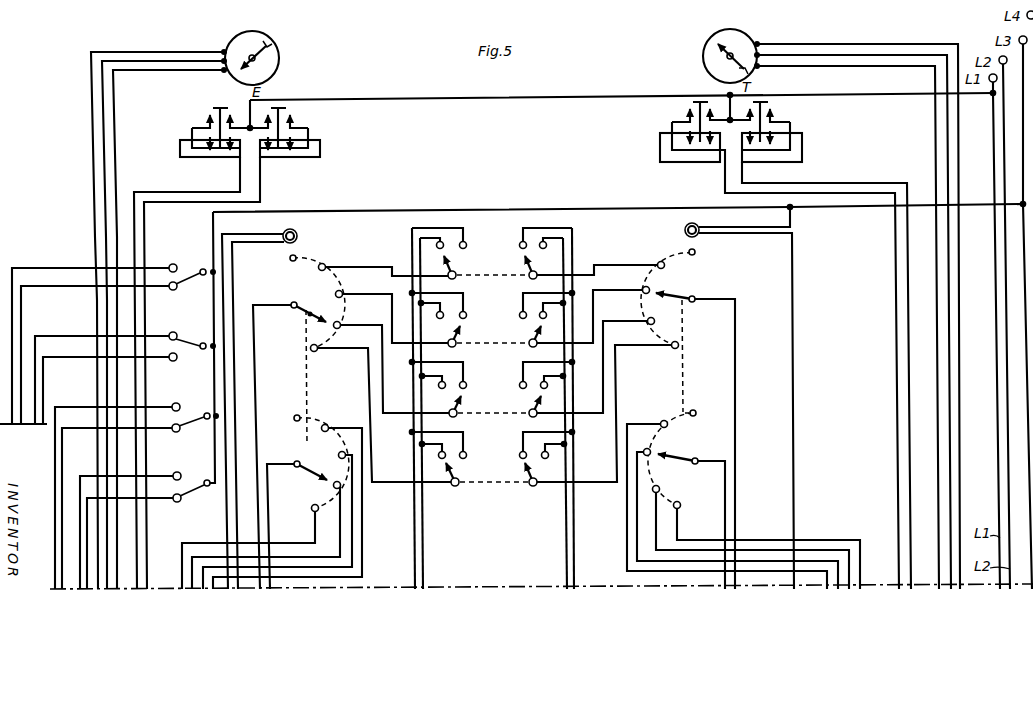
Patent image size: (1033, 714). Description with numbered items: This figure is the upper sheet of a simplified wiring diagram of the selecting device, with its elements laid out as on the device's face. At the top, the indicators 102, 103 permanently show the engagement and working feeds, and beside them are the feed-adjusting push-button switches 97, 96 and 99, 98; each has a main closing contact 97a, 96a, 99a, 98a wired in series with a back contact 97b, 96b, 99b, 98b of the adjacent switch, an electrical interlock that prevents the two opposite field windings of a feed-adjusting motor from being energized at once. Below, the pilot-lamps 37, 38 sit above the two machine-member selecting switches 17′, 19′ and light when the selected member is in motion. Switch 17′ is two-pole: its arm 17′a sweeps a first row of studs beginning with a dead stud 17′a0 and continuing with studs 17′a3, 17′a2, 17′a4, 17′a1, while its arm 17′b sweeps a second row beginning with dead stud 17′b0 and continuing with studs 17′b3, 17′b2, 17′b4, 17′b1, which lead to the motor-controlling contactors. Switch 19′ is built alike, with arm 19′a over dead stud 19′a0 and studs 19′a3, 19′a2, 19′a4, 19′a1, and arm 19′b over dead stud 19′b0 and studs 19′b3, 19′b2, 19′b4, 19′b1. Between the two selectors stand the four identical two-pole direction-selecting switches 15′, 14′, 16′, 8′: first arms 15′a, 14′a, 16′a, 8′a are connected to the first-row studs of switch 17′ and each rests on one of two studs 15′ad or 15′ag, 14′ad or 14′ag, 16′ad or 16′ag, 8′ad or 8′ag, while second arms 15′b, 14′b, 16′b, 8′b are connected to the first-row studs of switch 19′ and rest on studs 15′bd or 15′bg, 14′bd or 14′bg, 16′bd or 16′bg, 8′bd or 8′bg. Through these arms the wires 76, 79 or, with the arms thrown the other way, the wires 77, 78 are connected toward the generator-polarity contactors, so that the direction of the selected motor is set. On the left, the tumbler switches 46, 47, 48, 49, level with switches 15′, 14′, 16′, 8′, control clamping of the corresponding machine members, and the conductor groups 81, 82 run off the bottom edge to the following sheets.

The indicator 102 is at (280, 61).
The indicator 103 is at (709, 56).
The push-button switch 97 is at (195, 133).
The main closing contact 97a is at (213, 107).
The back contact 97b is at (198, 150).
The push-button switch 96 is at (300, 145).
The main closing contact 96a is at (286, 106).
The back contact 96b is at (300, 157).
The push-button switch 99 is at (676, 143).
The main closing contact 99a is at (693, 103).
The back contact 99b is at (690, 160).
The push-button switch 98 is at (779, 142).
The main closing contact 98a is at (768, 104).
The back contact 98b is at (765, 160).
The pilot-lamp 37 is at (298, 234).
The pilot-lamp 38 is at (685, 229).
The switch 46 is at (190, 268).
The switch 47 is at (190, 340).
The switch 48 is at (192, 409).
The switch 49 is at (192, 478).
The wire 76 is at (425, 573).
The wire 77 is at (414, 552).
The wire 78 is at (568, 553).
The wire 79 is at (575, 570).
The cable 81 is at (190, 577).
The cable 82 is at (776, 563).
The switch operating element 17′ is at (298, 377).
The arm 17′a is at (299, 423).
The dead stud 17′a0 is at (275, 264).
The stud 17′a1 is at (383, 414).
The stud 17′a2 is at (394, 309).
The stud 17′a3 is at (386, 261).
The stud 17′a4 is at (394, 361).
The arm 17′b is at (308, 503).
The dead stud 17′b0 is at (282, 419).
The stud 17′b1 is at (250, 547).
The stud 17′b2 is at (277, 516).
The stud 17′b3 is at (291, 498).
The stud 17′b4 is at (341, 487).
The switch operating element 19′ is at (696, 356).
The arm 19′a is at (688, 421).
The dead stud 19′a0 is at (715, 254).
The stud 19′a1 is at (606, 406).
The stud 19′a2 is at (591, 308).
The stud 19′a3 is at (599, 260).
The stud 19′a4 is at (594, 359).
The arm 19′b is at (686, 501).
The dead stud 19′b0 is at (716, 412).
The stud 19′b1 is at (767, 546).
The stud 19′b2 is at (729, 513).
The stud 19′b3 is at (725, 497).
The stud 19′b4 is at (751, 533).
The direction selecting switch 15′ is at (492, 253).
The arm 15′a is at (439, 267).
The arm 15′b is at (544, 267).
The stud 15′ad is at (432, 242).
The stud 15′ag is at (460, 237).
The stud 15′bd is at (527, 242).
The stud 15′bg is at (547, 245).
The direction selecting switch 14′ is at (489, 324).
The arm 14′a is at (442, 336).
The arm 14′b is at (549, 336).
The stud 14′ad is at (418, 315).
The stud 14′ag is at (459, 306).
The stud 14′bd is at (532, 312).
The stud 14′bg is at (563, 314).
The direction selecting switch 16′ is at (500, 392).
The arm 16′a is at (444, 406).
The arm 16′b is at (551, 406).
The stud 16′ad is at (416, 387).
The stud 16′ag is at (460, 375).
The stud 16′bd is at (527, 378).
The stud 16′bg is at (553, 385).
The direction selecting switch 8′ is at (483, 462).
The arm 8′a is at (443, 474).
The arm 8′b is at (544, 474).
The stud 8′ad is at (438, 456).
The stud 8′ag is at (456, 445).
The stud 8′bd is at (532, 449).
The stud 8′bg is at (566, 455).